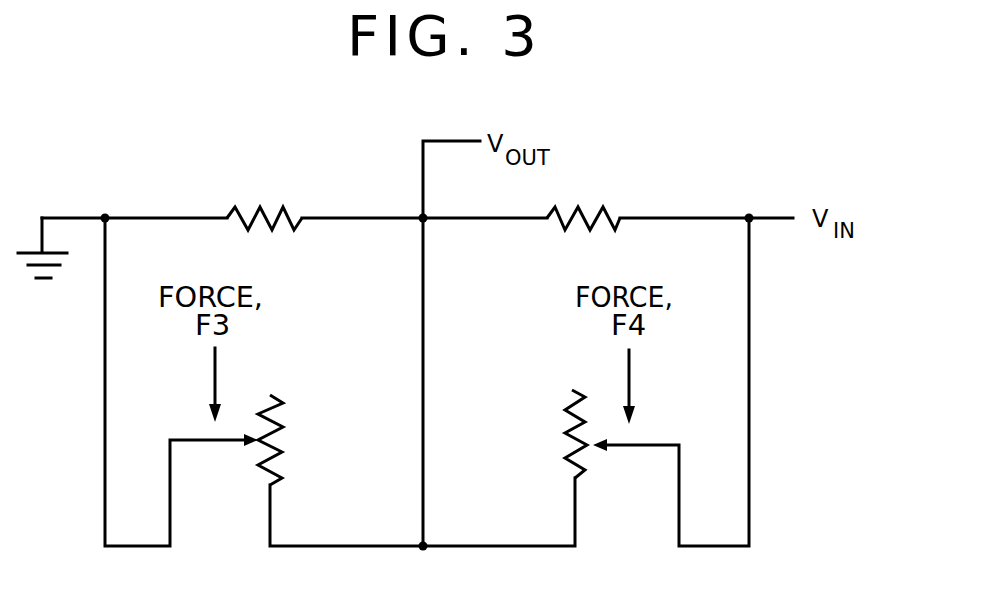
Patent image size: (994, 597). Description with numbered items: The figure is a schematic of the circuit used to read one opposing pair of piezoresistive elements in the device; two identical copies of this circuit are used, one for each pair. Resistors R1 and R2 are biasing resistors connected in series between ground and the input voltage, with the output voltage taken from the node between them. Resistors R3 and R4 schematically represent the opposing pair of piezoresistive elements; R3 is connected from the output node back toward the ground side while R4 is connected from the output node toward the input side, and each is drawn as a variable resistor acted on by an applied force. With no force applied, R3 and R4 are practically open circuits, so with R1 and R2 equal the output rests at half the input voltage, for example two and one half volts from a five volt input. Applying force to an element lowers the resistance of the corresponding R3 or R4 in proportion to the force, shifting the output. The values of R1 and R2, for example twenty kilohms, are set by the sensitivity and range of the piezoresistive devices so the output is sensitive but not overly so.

The biasing resistor R1 is at (258, 209).
The biasing resistor R2 is at (608, 213).
The piezoresistive element resistor R3 is at (283, 464).
The piezoresistive element resistor R4 is at (565, 458).